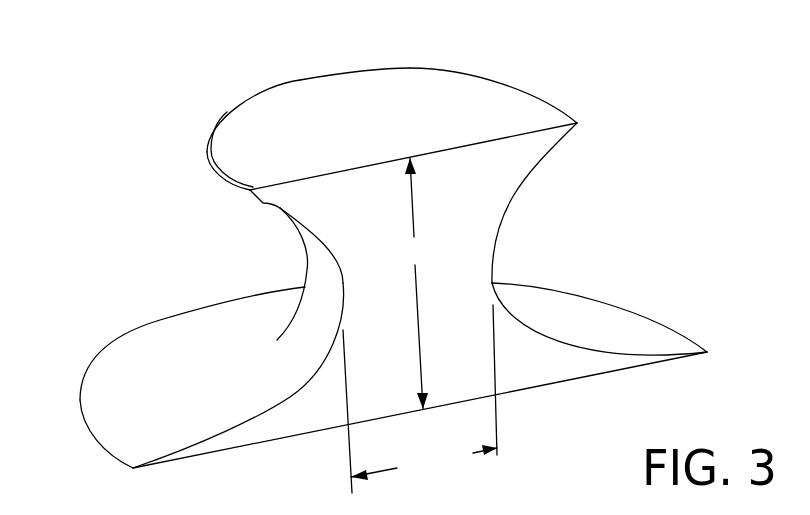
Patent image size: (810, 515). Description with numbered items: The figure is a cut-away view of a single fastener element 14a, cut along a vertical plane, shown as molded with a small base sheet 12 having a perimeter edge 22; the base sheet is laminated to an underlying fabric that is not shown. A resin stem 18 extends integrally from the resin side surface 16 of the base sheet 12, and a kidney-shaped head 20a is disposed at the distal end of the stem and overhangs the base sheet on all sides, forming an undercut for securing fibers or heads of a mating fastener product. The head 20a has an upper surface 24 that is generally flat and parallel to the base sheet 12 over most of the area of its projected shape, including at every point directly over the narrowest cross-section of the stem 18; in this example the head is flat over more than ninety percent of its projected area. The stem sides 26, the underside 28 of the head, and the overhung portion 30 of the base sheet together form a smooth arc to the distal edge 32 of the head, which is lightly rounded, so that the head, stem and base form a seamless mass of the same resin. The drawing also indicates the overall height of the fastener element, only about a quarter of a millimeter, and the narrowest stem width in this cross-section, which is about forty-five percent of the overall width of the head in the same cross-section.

The base sheet 12 is at (688, 337).
The fastener element 14a is at (684, 209).
The resin side surface 16 is at (607, 313).
The stem 18 is at (507, 203).
The kidney-shaped head 20a is at (560, 103).
The perimeter edge 22 is at (84, 420).
The upper surface 24 is at (430, 87).
The stem sides 26 is at (342, 273).
The underside of the head 28 is at (263, 203).
The overhung portion of the base sheet 30 is at (281, 405).
The distal edge of the head 32 is at (207, 150).